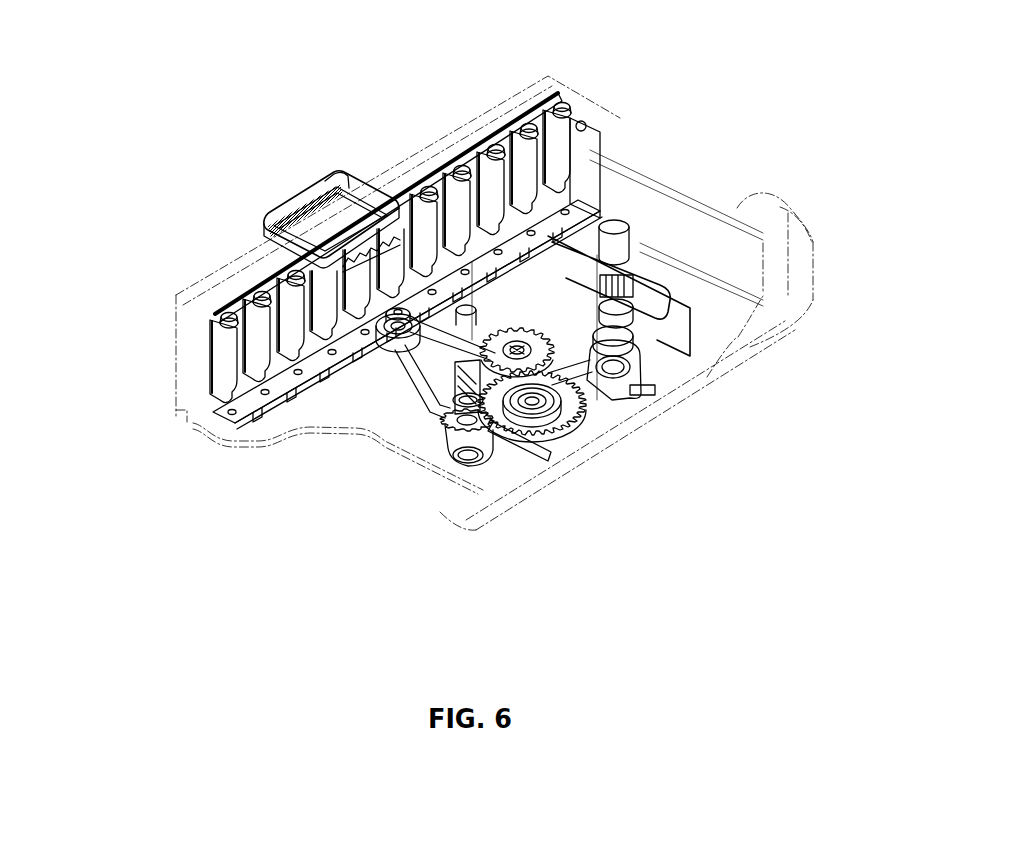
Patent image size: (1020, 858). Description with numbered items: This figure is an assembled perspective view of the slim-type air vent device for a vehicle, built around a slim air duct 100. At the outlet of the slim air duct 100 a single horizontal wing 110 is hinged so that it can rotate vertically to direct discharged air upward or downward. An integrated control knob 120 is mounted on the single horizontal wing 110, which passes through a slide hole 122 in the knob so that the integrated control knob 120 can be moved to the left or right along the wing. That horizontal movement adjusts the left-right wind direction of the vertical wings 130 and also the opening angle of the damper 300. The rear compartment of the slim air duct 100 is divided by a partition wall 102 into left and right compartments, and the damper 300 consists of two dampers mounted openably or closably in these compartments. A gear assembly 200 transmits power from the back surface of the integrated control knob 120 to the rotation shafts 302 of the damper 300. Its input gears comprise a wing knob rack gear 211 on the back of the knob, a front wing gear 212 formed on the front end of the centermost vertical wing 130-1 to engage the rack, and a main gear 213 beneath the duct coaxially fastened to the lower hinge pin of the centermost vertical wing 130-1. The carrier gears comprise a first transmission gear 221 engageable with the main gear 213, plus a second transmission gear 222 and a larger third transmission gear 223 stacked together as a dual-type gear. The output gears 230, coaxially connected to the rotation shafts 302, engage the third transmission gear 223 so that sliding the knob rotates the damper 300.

The slim air duct 100 is at (177, 379).
The partition wall 102 is at (642, 385).
The single horizontal wing 110 is at (459, 118).
The integrated control knob 120 is at (284, 194).
The slide hole 122 is at (393, 196).
The vertical wings 130 is at (207, 352).
The centermost vertical wing 130-1 is at (412, 260).
The gear assembly 200 is at (446, 471).
The wing knob rack gear 211 is at (310, 268).
The front wing gear 212 is at (303, 290).
The main gear 213 is at (393, 403).
The first transmission gear 221 is at (612, 243).
The second transmission gear 222 is at (618, 287).
The third transmission gear 223 is at (573, 417).
The output gears 230 is at (628, 397).
The damper 300 is at (682, 255).
The rotation shafts 302 is at (690, 335).